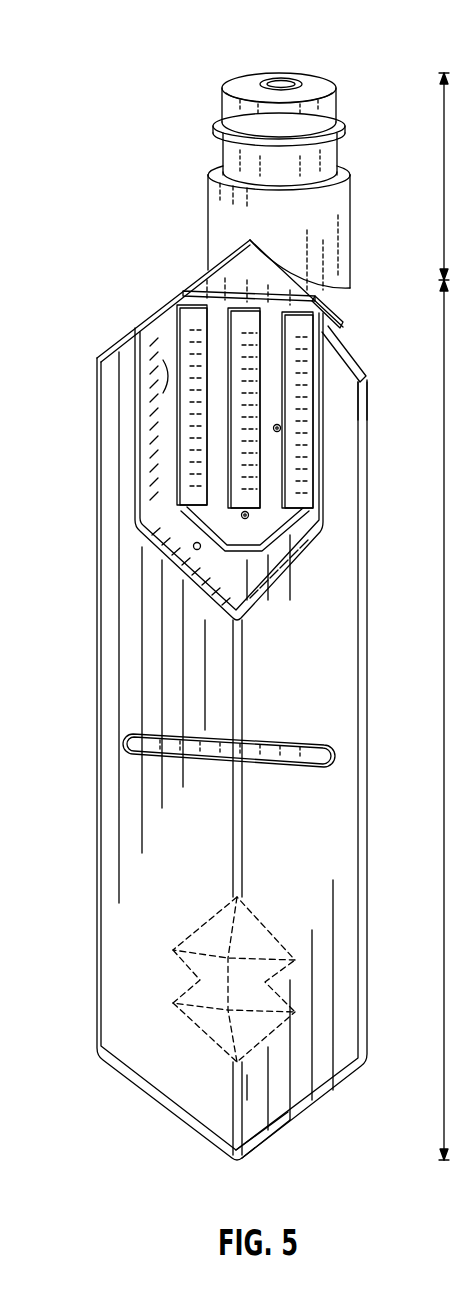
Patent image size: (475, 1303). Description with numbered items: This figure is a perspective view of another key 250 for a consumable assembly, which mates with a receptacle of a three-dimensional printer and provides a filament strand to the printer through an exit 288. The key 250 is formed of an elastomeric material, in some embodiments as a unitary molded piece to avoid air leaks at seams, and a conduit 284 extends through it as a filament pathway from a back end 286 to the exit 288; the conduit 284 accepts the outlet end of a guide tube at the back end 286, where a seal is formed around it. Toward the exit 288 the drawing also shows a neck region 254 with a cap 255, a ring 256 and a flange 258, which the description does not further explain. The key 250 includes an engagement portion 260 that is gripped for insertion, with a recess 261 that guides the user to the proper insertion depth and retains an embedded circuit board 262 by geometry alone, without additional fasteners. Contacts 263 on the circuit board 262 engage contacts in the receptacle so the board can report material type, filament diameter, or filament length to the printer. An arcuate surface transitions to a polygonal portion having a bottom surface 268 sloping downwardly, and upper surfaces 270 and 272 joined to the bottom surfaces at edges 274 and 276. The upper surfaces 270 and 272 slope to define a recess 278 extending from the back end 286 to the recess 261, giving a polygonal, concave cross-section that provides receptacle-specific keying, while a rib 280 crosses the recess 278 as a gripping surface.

The key 250 is at (97, 776).
The cylindrical neck portion 254 is at (444, 167).
The cap 255 is at (220, 128).
The neck ring 256 is at (222, 167).
The flange 258 is at (230, 152).
The engagement portion 260 is at (444, 778).
The recess 261 is at (194, 547).
The circuit board 262 is at (196, 331).
The contacts 263 is at (185, 398).
The bottom surface 268 is at (125, 690).
The upper surface 270 is at (344, 844).
The upper surface 272 is at (444, 650).
The edge 274 is at (97, 510).
The edge 276 is at (368, 432).
The recess 278 is at (228, 1103).
The rib 280 is at (172, 742).
The conduit 284 is at (287, 80).
The back end 286 is at (258, 1148).
The exit 288 is at (255, 72).